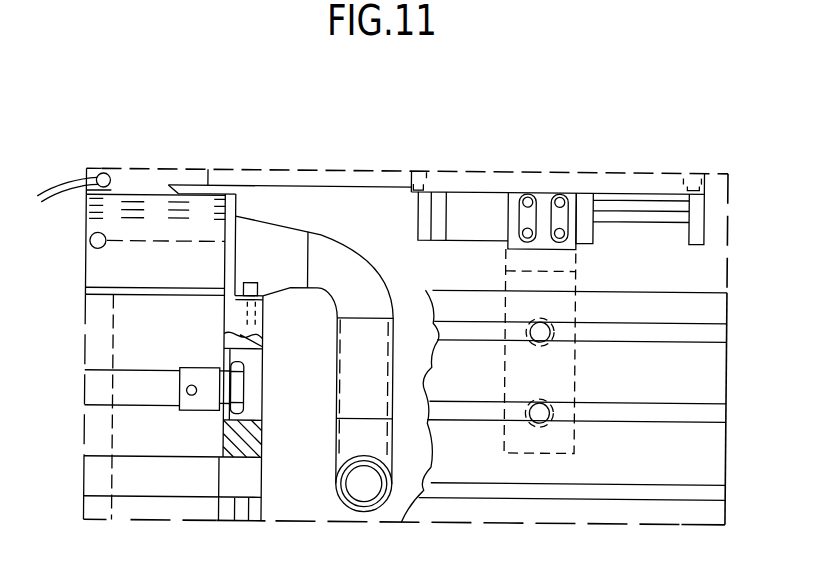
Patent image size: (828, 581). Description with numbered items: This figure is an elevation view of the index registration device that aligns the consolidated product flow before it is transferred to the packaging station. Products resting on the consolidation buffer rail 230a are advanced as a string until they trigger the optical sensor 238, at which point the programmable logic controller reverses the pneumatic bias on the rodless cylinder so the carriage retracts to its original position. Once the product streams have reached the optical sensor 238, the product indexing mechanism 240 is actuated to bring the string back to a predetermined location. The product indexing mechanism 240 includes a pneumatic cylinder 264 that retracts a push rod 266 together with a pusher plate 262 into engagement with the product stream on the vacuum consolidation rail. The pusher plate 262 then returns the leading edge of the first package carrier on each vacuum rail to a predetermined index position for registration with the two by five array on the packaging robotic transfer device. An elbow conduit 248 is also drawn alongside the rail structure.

The optical sensor 238 is at (101, 176).
The pusher plate 262 is at (214, 186).
The product indexing mechanism 240 is at (518, 117).
The pneumatic cylinder 264 is at (498, 232).
The elbow conduit 248 is at (365, 265).
The push rod 266 is at (638, 223).
The consolidation buffer rail 230a is at (190, 276).